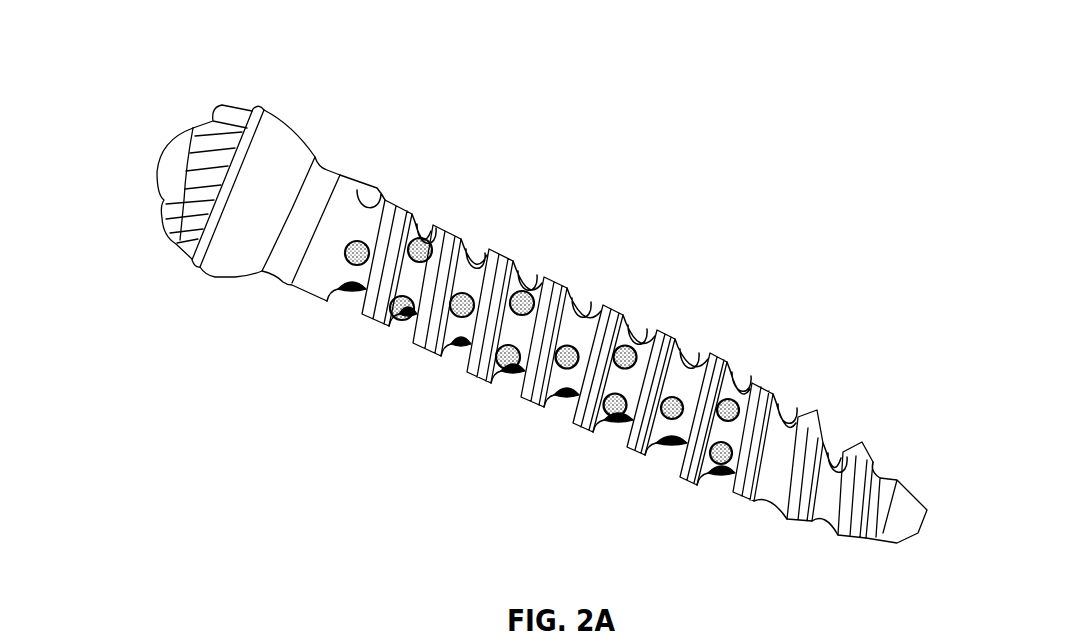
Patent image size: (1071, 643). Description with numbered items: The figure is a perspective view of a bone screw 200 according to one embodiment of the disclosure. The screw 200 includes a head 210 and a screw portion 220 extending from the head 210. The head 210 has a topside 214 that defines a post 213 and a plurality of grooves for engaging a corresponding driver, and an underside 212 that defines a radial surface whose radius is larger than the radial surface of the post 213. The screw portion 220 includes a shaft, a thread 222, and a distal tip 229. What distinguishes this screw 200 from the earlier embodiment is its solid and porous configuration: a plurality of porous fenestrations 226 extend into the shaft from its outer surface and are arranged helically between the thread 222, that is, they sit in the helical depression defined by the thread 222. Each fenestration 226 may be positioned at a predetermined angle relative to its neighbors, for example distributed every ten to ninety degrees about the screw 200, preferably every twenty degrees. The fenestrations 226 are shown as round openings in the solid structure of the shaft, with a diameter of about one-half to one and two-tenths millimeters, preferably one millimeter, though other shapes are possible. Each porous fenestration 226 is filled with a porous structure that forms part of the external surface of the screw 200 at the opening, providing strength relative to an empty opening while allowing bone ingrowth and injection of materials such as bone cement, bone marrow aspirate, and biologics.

The screw 200 is at (148, 38).
The head 210 is at (305, 90).
The underside 212 is at (250, 282).
The post 213 is at (193, 128).
The topside 214 is at (149, 243).
The screw portion 220 is at (611, 227).
The thread 222 is at (501, 254).
The porous fenestration 226 is at (400, 318).
The distal tip 229 is at (905, 489).